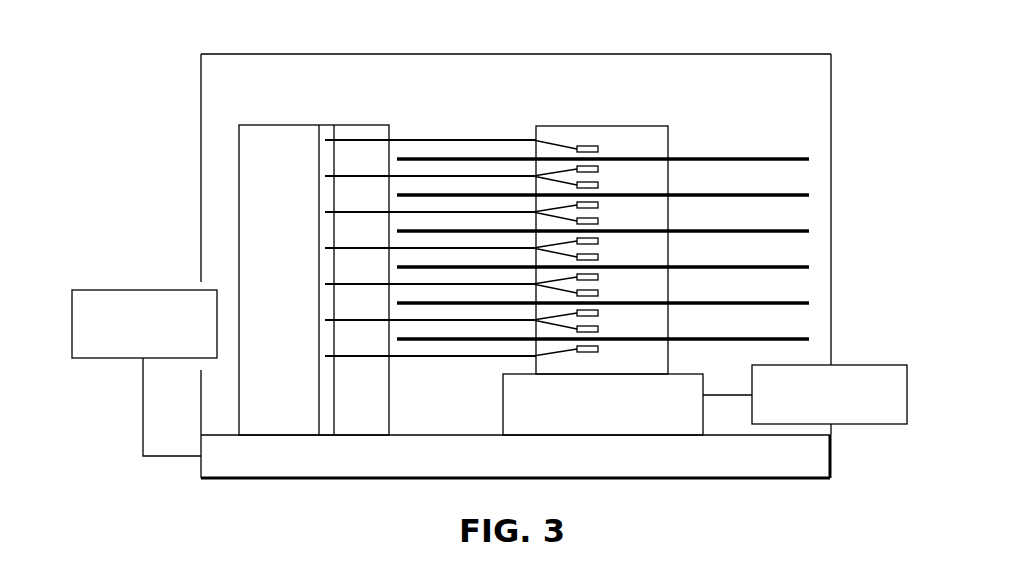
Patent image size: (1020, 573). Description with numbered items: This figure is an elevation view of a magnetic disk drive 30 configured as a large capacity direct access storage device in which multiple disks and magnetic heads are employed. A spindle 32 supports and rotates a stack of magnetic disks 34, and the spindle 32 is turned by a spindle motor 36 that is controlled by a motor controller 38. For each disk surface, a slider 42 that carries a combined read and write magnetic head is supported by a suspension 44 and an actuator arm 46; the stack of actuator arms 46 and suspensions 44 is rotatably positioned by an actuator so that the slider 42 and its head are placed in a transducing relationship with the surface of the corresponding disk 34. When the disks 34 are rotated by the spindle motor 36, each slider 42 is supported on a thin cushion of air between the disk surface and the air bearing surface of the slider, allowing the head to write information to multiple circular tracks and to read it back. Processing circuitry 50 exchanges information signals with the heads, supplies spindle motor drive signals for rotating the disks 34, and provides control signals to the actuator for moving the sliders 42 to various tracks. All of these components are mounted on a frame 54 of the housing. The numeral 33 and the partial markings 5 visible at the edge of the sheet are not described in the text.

The section line indicator 5 is at (294, 8).
The magnetic disk drive 30 is at (722, 128).
The spindle 32 is at (657, 126).
The housing 33 is at (771, 54).
The magnetic disk 34 is at (803, 160).
The spindle motor 36 is at (618, 419).
The motor controller 38 is at (865, 424).
The slider 42 is at (597, 168).
The suspension 44 is at (567, 178).
The actuator arm 46 is at (507, 176).
The processing circuitry 50 is at (116, 290).
The frame 54 is at (255, 473).